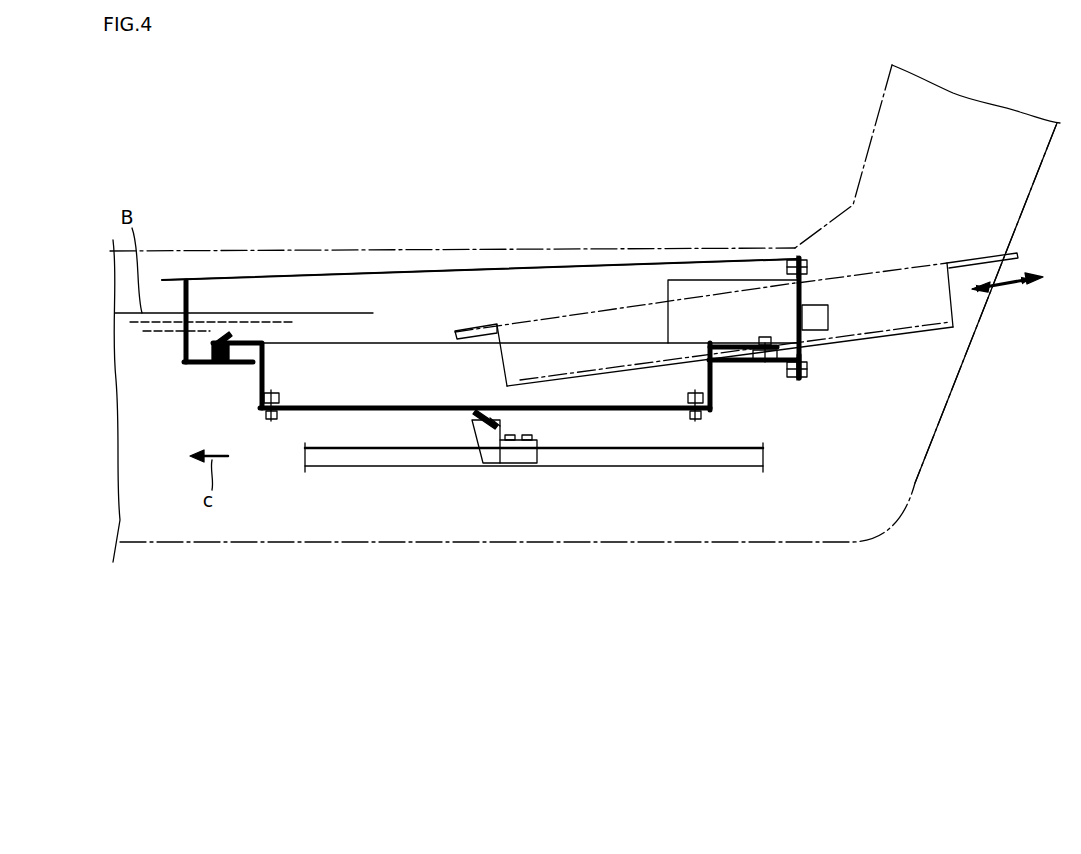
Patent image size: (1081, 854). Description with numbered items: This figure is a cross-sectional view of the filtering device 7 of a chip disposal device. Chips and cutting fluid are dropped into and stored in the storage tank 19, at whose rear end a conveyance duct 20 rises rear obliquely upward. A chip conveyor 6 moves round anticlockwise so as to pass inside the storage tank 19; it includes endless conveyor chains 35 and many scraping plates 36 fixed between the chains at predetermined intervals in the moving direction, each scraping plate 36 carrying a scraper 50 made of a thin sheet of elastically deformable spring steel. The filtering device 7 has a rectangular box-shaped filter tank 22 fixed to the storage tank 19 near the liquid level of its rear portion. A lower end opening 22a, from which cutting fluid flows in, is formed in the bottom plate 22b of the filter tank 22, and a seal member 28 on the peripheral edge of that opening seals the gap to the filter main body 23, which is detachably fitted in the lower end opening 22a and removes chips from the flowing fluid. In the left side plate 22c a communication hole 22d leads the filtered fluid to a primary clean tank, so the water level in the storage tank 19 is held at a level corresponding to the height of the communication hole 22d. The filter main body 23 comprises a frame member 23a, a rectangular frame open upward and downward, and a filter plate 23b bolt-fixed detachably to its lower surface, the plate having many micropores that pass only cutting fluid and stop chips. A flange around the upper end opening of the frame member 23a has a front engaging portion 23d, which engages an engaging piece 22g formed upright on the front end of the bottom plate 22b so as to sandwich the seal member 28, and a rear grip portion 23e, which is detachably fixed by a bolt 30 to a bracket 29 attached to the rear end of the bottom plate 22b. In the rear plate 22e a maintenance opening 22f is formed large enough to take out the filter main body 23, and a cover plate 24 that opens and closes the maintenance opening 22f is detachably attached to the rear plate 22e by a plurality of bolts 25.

The chip conveyor 6 is at (313, 475).
The filtering device 7 is at (208, 272).
The storage tank 19 is at (352, 250).
The conveyance duct 20 is at (883, 125).
The filter tank 22 is at (537, 314).
The lower end opening 22a is at (256, 367).
The bottom plate 22b is at (200, 362).
The left side plate 22c is at (602, 282).
The communication hole 22d is at (744, 290).
The rear plate 22e is at (800, 378).
The maintenance opening 22f is at (805, 352).
The engaging piece 22g is at (210, 348).
The filter main body 23 is at (615, 367).
The frame member 23a is at (720, 390).
The filter plate 23b is at (620, 409).
The engaging portion 23d is at (241, 343).
The grip portion 23e is at (737, 344).
The cover plate 24 is at (803, 297).
The bolt 25 is at (806, 266).
The seal member 28 is at (227, 363).
The bracket 29 is at (778, 361).
The bolt 30 is at (764, 342).
The conveyor chain 35 is at (372, 468).
The scraping plate 36 is at (465, 437).
The scraper 50 is at (490, 410).